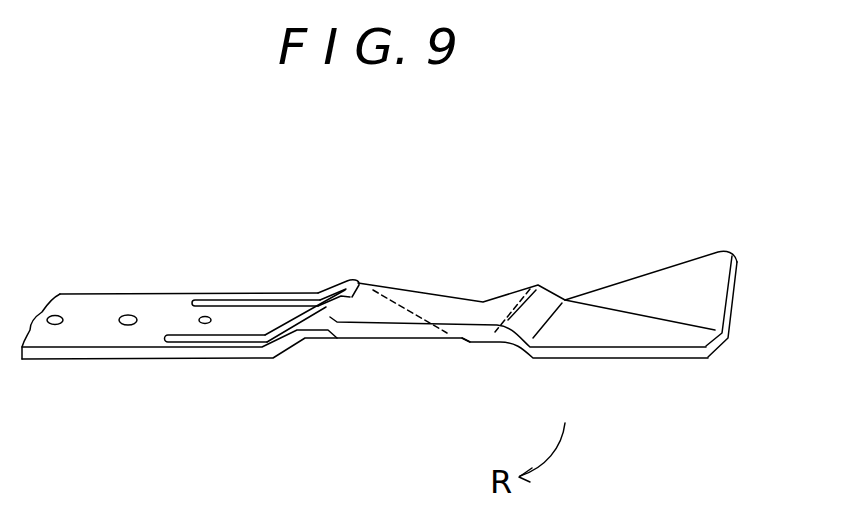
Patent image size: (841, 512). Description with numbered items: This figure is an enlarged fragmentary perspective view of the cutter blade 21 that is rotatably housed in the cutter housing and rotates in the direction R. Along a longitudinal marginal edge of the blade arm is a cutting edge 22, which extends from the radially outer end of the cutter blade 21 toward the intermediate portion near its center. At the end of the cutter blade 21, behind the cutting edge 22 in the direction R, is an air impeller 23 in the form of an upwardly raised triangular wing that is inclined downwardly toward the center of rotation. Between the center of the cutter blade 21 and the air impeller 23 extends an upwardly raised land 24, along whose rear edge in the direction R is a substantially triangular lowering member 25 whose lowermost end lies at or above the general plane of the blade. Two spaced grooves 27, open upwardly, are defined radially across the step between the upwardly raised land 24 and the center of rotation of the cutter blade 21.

The cutter blade 21 is at (740, 343).
The cutting edge 22 is at (565, 358).
The air impeller 23 is at (692, 280).
The upwardly raised land 24 is at (368, 305).
The lowering member 25 is at (481, 345).
The grooves 27 is at (259, 300).